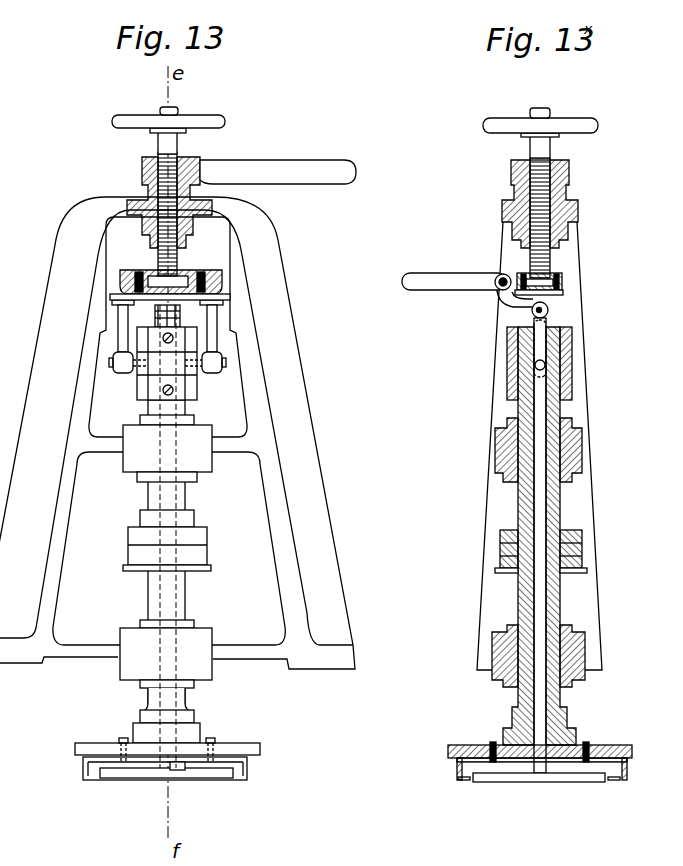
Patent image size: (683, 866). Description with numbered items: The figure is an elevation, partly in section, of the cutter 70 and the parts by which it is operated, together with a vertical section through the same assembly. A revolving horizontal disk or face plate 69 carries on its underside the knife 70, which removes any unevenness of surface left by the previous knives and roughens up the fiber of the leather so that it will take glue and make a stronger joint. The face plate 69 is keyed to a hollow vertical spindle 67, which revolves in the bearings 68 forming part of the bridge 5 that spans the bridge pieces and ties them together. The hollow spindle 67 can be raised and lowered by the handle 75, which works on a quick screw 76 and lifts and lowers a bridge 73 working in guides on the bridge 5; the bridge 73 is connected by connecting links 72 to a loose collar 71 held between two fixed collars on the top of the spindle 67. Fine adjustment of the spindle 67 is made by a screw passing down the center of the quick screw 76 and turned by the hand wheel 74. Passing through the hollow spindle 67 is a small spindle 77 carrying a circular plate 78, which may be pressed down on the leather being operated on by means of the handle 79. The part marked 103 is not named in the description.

In FIG. 13, the bridge 5 is at (177, 433).
In FIG. 13X, the bridge 5 is at (586, 376).
In FIG. 13, the hollow vertical spindle 67 is at (187, 498).
In FIG. 13X, the hollow vertical spindle 67 is at (556, 326).
In FIG. 13, the bearings 68 is at (197, 423).
In FIG. 13X, the bearings 68 is at (582, 477).
In FIG. 13, the revolving horizontal disk or face plate 69 is at (225, 742).
In FIG. 13X, the revolving horizontal disk or face plate 69 is at (603, 746).
In FIG. 13, the knife 70 is at (82, 768).
In FIG. 13X, the knife 70 is at (459, 768).
In FIG. 13, the loose collar 71 is at (167, 352).
In FIG. 13X, the loose collar 71 is at (507, 365).
In FIG. 13, the connecting links 72 is at (117, 323).
In FIG. 13X, the connecting links 72 is at (572, 343).
In FIG. 13, the bridge 73 is at (222, 292).
In FIG. 13X, the bridge 73 is at (564, 282).
In FIG. 13, the hand wheel 74 is at (218, 116).
In FIG. 13X, the hand wheel 74 is at (490, 118).
In FIG. 13, the handle 75 is at (268, 158).
In FIG. 13, the quick screw 76 is at (181, 244).
In FIG. 13X, the quick screw 76 is at (562, 243).
In FIG. 13, the small spindle 77 is at (176, 772).
In FIG. 13X, the small spindle 77 is at (535, 593).
In FIG. 13, the circular plate 78 is at (136, 779).
In FIG. 13X, the circular plate 78 is at (557, 782).
In FIG. 13X, the handle 79 is at (411, 273).
In FIG. 13, the spring ring 103 is at (128, 547).
In FIG. 13X, the spring ring 103 is at (586, 547).